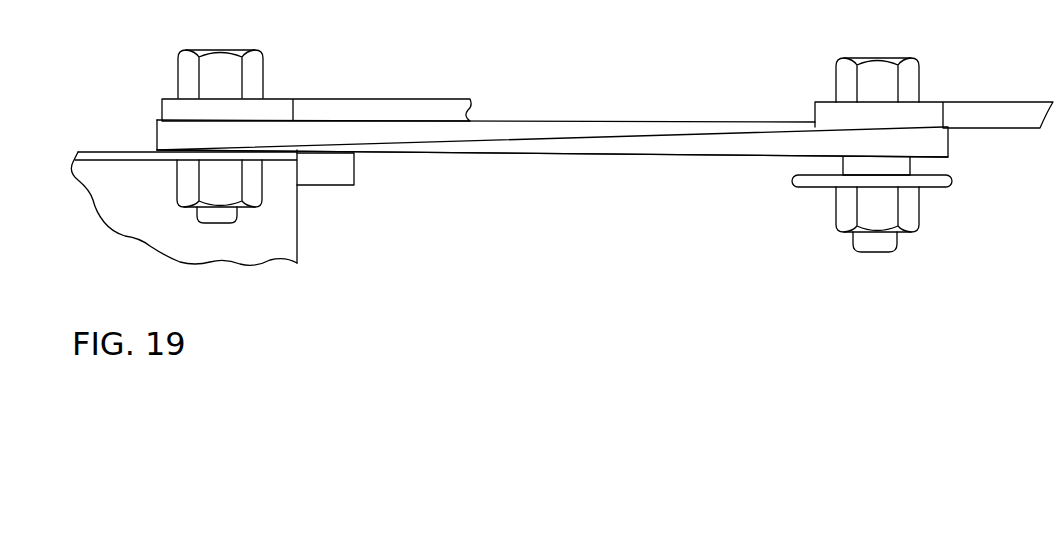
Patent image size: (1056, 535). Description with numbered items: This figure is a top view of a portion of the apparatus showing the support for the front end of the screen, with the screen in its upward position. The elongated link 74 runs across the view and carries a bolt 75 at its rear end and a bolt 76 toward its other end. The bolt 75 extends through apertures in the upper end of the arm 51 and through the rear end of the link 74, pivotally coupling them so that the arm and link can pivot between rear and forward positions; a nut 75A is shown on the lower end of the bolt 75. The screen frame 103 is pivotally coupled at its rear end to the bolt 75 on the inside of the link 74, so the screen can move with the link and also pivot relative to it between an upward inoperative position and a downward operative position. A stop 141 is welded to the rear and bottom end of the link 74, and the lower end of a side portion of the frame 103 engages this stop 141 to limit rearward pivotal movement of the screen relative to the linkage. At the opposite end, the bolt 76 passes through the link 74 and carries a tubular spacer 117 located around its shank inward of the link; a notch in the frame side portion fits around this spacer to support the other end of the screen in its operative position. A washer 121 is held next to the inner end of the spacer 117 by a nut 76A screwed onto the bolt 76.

The link 74 is at (723, 125).
The arm 51 is at (448, 99).
The bolt 75 is at (200, 50).
The nut 75A is at (263, 185).
The screen frame 103 is at (132, 152).
The stop 141 is at (356, 177).
The bolt 76 is at (895, 57).
The tubular spacer 117 is at (912, 171).
The washer 121 is at (938, 192).
The nut 76A is at (833, 207).